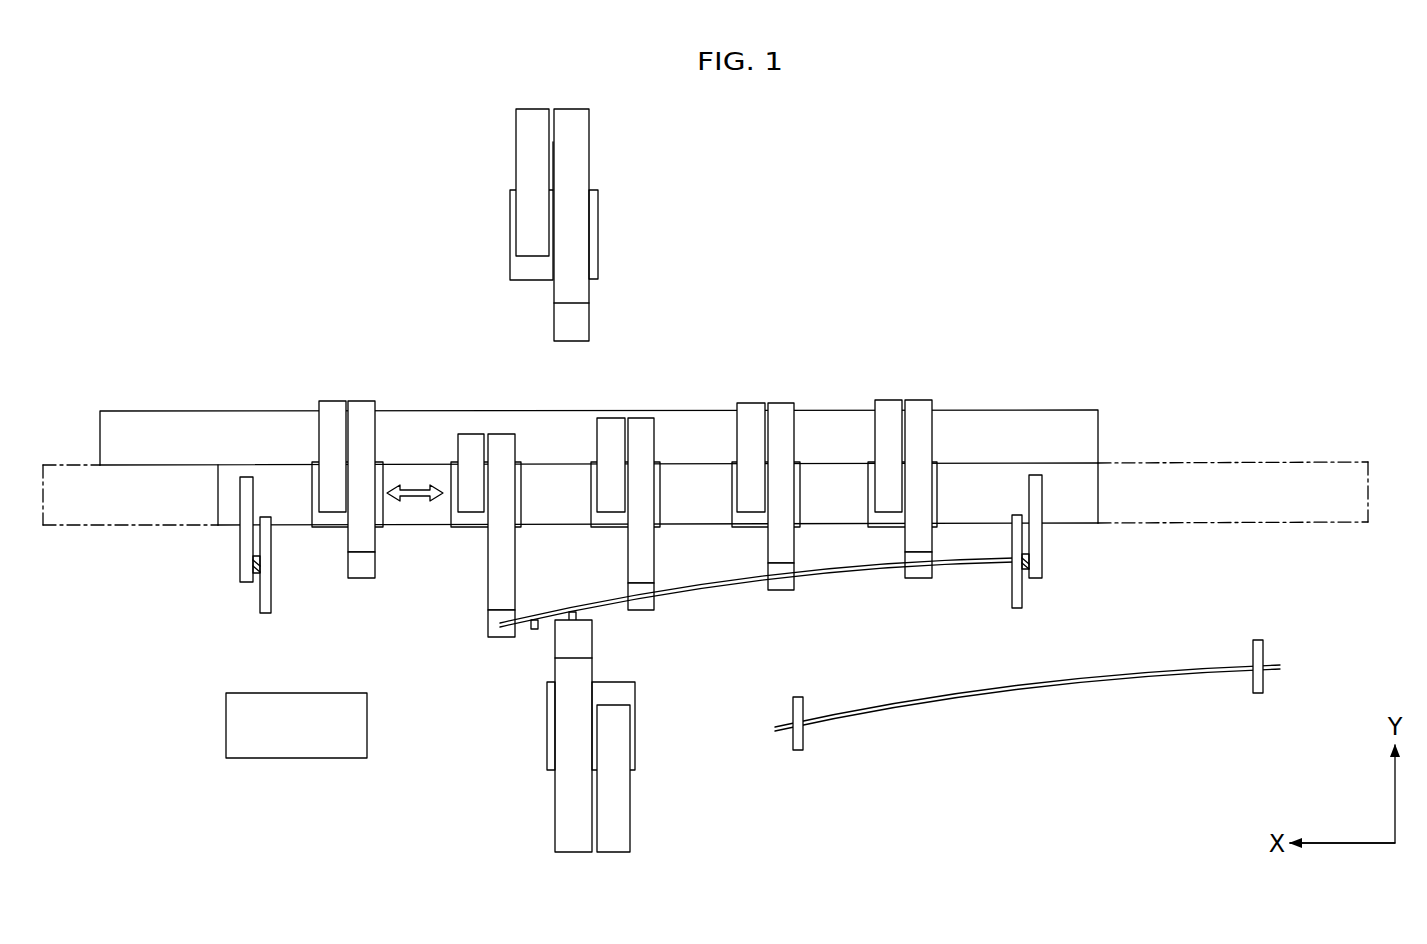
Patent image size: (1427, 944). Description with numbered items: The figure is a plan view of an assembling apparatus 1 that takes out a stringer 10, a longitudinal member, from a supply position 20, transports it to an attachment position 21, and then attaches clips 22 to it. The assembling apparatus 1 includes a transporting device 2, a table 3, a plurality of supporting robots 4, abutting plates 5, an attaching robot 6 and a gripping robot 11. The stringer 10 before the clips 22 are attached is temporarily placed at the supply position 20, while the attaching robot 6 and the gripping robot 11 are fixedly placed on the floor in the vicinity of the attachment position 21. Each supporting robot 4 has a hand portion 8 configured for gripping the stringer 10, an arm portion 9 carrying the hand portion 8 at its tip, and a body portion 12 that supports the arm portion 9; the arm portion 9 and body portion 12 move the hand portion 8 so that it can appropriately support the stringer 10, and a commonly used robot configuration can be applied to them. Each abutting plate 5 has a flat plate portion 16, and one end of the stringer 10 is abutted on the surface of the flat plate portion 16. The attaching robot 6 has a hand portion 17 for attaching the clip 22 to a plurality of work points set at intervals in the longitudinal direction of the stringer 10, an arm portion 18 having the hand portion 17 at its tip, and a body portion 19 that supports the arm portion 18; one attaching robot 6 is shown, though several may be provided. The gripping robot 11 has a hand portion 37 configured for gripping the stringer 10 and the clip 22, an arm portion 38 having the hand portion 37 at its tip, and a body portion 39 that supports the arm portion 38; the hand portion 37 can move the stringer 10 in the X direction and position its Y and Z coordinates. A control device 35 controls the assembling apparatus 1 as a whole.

The assembling apparatus 1 is at (599, 335).
The transporting device 2 is at (1033, 428).
The table 3 is at (425, 515).
The supporting robot 4 is at (647, 481).
The abutting plate 5 is at (647, 581).
The attaching robot 6 is at (605, 736).
The hand portion 8 is at (363, 572).
The arm portion 9 is at (369, 436).
The stringer 10 is at (845, 572).
The gripping robot 11 is at (553, 225).
The body portion 12 is at (330, 528).
The flat plate portion 16 is at (265, 585).
The hand portion 17 is at (557, 650).
The arm portion 18 is at (567, 810).
The body portion 19 is at (612, 694).
The supply position 20 is at (1175, 650).
The attachment position 21 is at (568, 600).
The clip 22 is at (530, 632).
The control device 35 is at (297, 760).
The hand portion 37 is at (565, 318).
The arm portion 38 is at (572, 150).
The body portion 39 is at (512, 262).